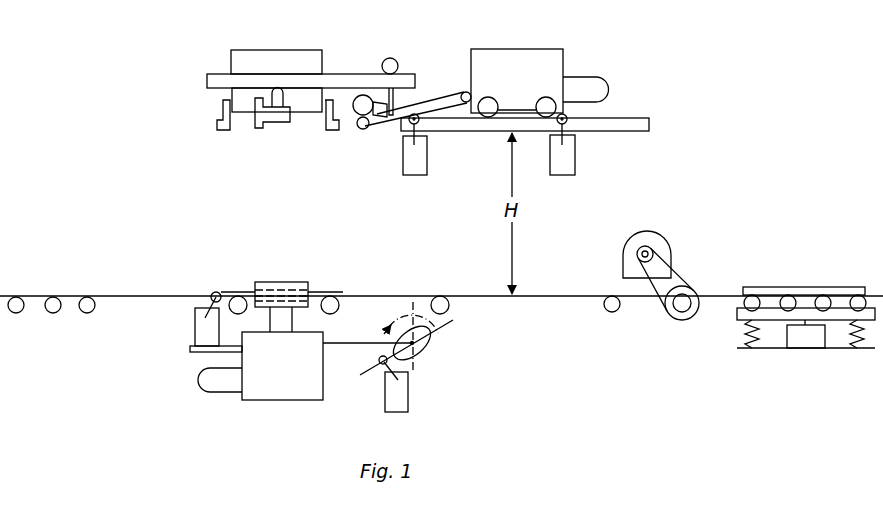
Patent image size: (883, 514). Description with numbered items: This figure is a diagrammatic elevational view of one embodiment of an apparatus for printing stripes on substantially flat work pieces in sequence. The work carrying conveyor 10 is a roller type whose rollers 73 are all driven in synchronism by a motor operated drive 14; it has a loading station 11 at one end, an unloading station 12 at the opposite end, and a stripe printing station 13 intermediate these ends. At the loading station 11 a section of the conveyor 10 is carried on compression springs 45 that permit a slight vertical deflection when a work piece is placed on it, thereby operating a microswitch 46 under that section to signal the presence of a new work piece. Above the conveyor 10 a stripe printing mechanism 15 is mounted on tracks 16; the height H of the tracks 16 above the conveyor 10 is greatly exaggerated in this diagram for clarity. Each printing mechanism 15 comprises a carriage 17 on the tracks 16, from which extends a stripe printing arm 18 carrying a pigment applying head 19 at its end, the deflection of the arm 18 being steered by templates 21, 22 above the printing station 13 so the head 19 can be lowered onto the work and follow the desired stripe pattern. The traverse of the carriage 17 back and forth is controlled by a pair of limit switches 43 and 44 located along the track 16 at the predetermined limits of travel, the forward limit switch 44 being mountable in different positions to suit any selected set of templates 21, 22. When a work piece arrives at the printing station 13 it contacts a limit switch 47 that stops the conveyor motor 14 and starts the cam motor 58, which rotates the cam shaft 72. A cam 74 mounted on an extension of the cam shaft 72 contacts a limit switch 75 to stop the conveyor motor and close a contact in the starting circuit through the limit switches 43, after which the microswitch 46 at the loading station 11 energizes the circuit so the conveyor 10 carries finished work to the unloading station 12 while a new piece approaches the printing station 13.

The work carrying conveyor 10 is at (538, 292).
The loading station 11 is at (787, 316).
The unloading station 12 is at (64, 286).
The stripe printing station 13 is at (291, 275).
The motor operated drive 14 is at (662, 249).
The stripe printing mechanism 15 is at (409, 81).
The tracks 16 is at (627, 122).
The carriage 17 is at (249, 58).
The stripe printing arm 18 is at (433, 100).
The pigment applying head 19 is at (353, 125).
The template 21 is at (311, 54).
The template 22 is at (333, 73).
The limit switch 43 is at (575, 165).
The limit switch 44 is at (403, 162).
The compression spring 45 is at (745, 332).
The microswitch 46 is at (806, 347).
The limit switch 47 is at (195, 331).
The cam motor 58 is at (212, 391).
The cam shaft 72 is at (365, 344).
The rollers 73 is at (87, 313).
The cam 74 is at (428, 348).
The limit switch 75 is at (403, 398).